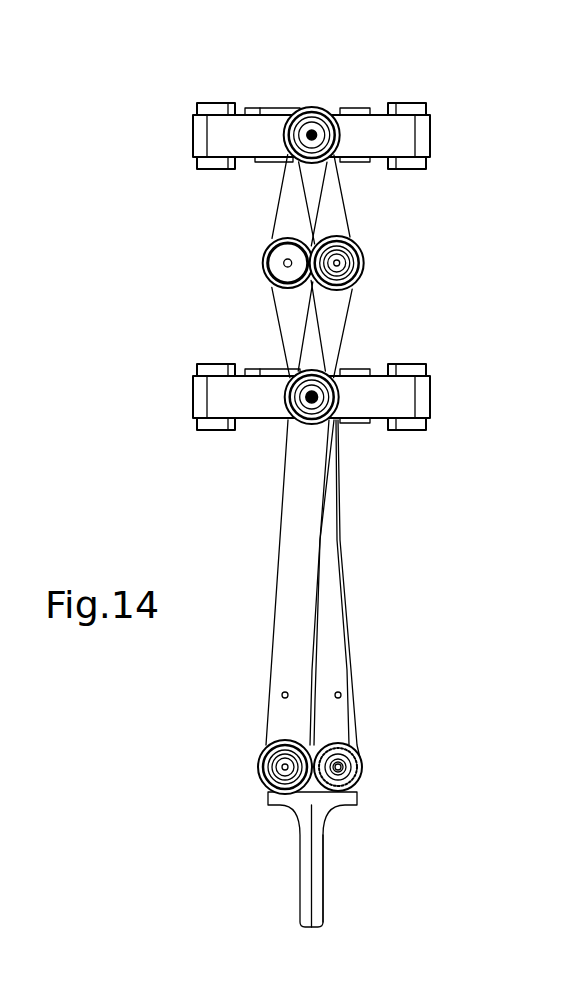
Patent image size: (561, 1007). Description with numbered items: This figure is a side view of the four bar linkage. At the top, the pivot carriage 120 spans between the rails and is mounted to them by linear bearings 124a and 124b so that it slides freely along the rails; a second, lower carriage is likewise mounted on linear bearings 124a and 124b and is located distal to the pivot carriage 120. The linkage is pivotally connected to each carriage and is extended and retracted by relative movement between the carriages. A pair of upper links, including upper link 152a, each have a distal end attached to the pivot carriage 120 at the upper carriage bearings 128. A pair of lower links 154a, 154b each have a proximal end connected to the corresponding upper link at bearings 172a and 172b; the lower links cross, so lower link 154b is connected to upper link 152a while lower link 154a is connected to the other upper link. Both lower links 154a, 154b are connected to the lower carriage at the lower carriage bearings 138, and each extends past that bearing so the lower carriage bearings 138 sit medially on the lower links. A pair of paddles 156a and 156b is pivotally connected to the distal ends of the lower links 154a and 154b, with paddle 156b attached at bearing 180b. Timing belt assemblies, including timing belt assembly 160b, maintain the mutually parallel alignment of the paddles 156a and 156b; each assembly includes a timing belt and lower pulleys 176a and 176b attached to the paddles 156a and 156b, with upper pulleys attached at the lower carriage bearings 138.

The pivot carriage 120 is at (390, 135).
The linear bearing 124a is at (216, 103).
The linear bearing 124b is at (406, 103).
The upper carriage bearing 128 is at (325, 118).
The lower carriage bearing 138 is at (297, 417).
The upper link 152a is at (292, 222).
The lower link 154a is at (335, 221).
The lower link 154b is at (330, 616).
The paddle 156a is at (300, 895).
The paddle 156b is at (323, 900).
The timing belt assembly 160b is at (355, 705).
The bearing 172a is at (287, 263).
The bearing 172b is at (345, 262).
The lower pulley 176a is at (283, 768).
The lower pulley 176b is at (347, 760).
The bearing 180b is at (345, 770).